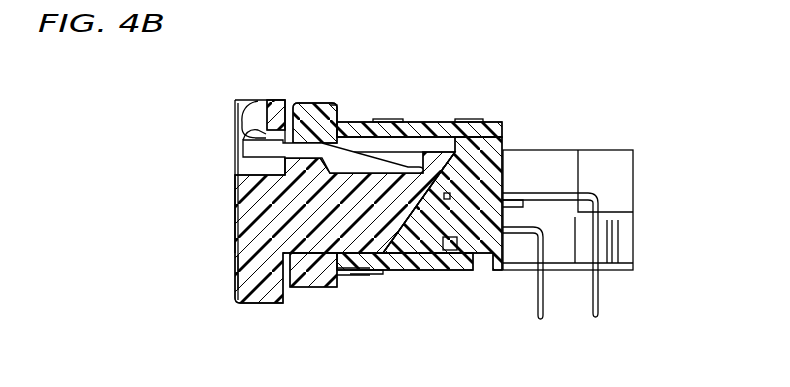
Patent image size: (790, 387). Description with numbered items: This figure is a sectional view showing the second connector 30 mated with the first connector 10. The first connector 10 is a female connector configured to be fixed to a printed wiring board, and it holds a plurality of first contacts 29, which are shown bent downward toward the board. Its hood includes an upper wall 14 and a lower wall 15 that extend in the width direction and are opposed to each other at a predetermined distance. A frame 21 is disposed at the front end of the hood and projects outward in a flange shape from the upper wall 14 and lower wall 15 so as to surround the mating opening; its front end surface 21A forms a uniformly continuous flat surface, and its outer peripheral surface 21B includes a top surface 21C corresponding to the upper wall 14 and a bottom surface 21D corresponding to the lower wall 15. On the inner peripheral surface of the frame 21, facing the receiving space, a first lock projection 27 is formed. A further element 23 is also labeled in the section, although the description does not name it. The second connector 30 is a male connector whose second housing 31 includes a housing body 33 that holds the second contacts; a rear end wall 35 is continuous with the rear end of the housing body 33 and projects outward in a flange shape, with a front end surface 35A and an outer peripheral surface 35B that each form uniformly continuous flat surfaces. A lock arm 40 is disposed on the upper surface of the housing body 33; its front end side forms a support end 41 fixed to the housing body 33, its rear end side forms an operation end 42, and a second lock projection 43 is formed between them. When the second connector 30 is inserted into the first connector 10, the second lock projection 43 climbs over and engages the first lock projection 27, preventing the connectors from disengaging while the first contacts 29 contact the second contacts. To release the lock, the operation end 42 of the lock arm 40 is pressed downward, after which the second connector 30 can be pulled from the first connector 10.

The first connector 10 is at (453, 114).
The upper wall 14 is at (340, 122).
The lower wall 15 is at (350, 274).
The frame 21 is at (316, 290).
The front end surface 21A is at (237, 284).
The outer peripheral surface 21B is at (301, 103).
The top surface 21C is at (334, 104).
The bottom surface 21D is at (340, 285).
The shell 23 is at (413, 128).
The first lock projection 27 is at (258, 146).
The first contacts 29 is at (553, 302).
The second connector 30 is at (184, 203).
The second housing 31 is at (228, 190).
The housing body 33 is at (410, 258).
The rear end wall 35 is at (267, 304).
The front end surface 35A is at (285, 291).
The outer peripheral surface 35B is at (276, 102).
The lock arm 40 is at (251, 119).
The support end 41 is at (403, 166).
The operation end 42 is at (236, 102).
The second lock projection 43 is at (355, 124).